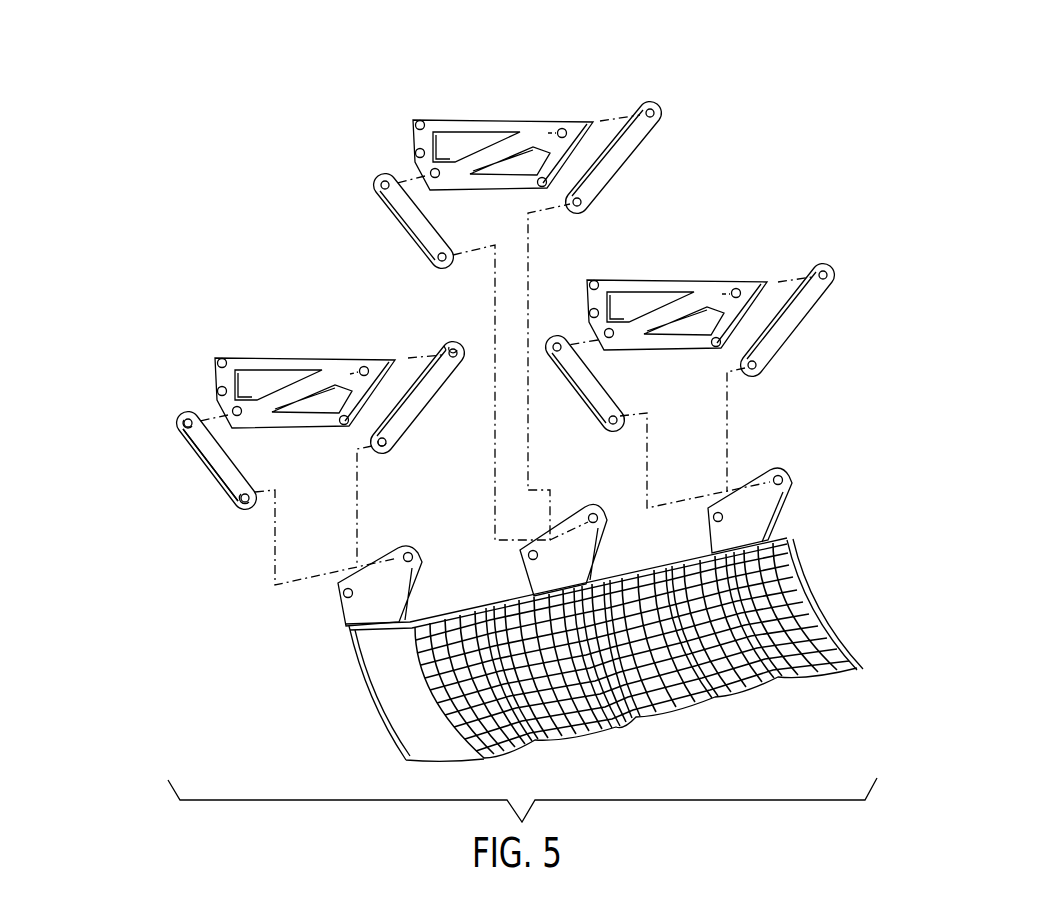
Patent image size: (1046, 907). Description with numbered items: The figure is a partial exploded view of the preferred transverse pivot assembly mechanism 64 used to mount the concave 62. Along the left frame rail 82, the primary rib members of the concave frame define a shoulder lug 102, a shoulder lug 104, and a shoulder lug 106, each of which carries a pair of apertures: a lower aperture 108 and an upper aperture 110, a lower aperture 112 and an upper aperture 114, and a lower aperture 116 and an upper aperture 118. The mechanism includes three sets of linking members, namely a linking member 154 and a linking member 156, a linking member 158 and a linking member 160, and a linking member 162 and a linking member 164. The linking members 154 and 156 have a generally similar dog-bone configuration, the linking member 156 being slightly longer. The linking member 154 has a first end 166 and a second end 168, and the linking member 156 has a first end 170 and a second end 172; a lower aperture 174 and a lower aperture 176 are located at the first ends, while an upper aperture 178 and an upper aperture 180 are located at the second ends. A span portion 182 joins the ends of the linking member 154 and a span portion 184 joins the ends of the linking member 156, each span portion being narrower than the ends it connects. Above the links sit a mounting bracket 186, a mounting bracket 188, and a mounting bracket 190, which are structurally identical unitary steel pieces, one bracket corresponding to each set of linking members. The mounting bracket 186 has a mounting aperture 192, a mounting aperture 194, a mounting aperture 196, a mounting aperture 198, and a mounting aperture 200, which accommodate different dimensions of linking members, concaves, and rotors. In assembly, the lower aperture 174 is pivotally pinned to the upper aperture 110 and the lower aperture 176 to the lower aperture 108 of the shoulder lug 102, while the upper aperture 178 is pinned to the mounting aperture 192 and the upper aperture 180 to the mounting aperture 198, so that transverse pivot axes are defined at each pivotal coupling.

The concave 62 is at (285, 746).
The transverse pivot assembly mechanism 64 is at (884, 114).
The left frame rail 82 is at (775, 542).
The shoulder lug 102 is at (345, 616).
The shoulder lug 104 is at (575, 564).
The shoulder lug 106 is at (786, 517).
The lower aperture 108 is at (340, 590).
The upper aperture 110 is at (410, 552).
The lower aperture 112 is at (525, 558).
The upper aperture 114 is at (594, 512).
The lower aperture 116 is at (713, 521).
The upper aperture 118 is at (782, 471).
The linking member 154 is at (222, 480).
The linking member 156 is at (437, 399).
The linking member 158 is at (415, 235).
The linking member 160 is at (623, 157).
The linking member 162 is at (598, 401).
The linking member 164 is at (793, 318).
The first end 166 is at (252, 512).
The second end 168 is at (189, 414).
The first end 170 is at (392, 455).
The second end 172 is at (458, 343).
The lower aperture 174 is at (252, 490).
The lower aperture 176 is at (380, 436).
The upper aperture 178 is at (203, 413).
The upper aperture 180 is at (450, 344).
The span portion 182 is at (200, 463).
The span portion 184 is at (436, 398).
The mounting bracket 186 is at (323, 357).
The mounting bracket 188 is at (517, 113).
The mounting bracket 190 is at (703, 280).
The mounting aperture 192 is at (240, 411).
The mounting aperture 194 is at (226, 392).
The mounting aperture 196 is at (225, 368).
The mounting aperture 198 is at (365, 369).
The mounting aperture 200 is at (346, 428).